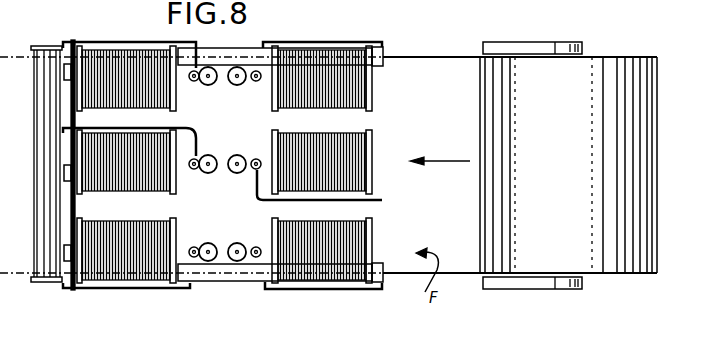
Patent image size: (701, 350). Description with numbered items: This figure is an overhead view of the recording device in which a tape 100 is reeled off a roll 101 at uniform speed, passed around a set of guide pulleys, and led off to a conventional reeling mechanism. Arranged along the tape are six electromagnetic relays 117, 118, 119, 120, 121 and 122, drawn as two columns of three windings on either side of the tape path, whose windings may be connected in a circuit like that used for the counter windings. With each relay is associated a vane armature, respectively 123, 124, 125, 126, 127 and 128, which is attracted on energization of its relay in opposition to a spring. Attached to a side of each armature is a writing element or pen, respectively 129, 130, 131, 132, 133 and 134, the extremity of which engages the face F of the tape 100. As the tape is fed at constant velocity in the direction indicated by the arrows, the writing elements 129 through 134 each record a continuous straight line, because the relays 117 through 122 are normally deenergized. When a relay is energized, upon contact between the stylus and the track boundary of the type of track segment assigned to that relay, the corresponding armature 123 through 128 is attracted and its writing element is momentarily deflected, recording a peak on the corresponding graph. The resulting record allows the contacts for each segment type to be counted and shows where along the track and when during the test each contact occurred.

The tape 100 is at (438, 68).
The roll 101 is at (597, 68).
The electromagnetic relay 117 is at (103, 262).
The electromagnetic relay 118 is at (126, 162).
The electromagnetic relay 119 is at (92, 68).
The electromagnetic relay 120 is at (295, 263).
The electromagnetic relay 121 is at (322, 162).
The electromagnetic relay 122 is at (293, 56).
The vane armature 123 is at (132, 288).
The vane armature 124 is at (136, 126).
The vane armature 125 is at (145, 42).
The vane armature 126 is at (316, 287).
The vane armature 127 is at (362, 199).
The vane armature 128 is at (315, 42).
The writing element 129 is at (207, 243).
The writing element 130 is at (208, 173).
The writing element 131 is at (209, 85).
The writing element 132 is at (236, 243).
The writing element 133 is at (238, 154).
The writing element 134 is at (236, 86).